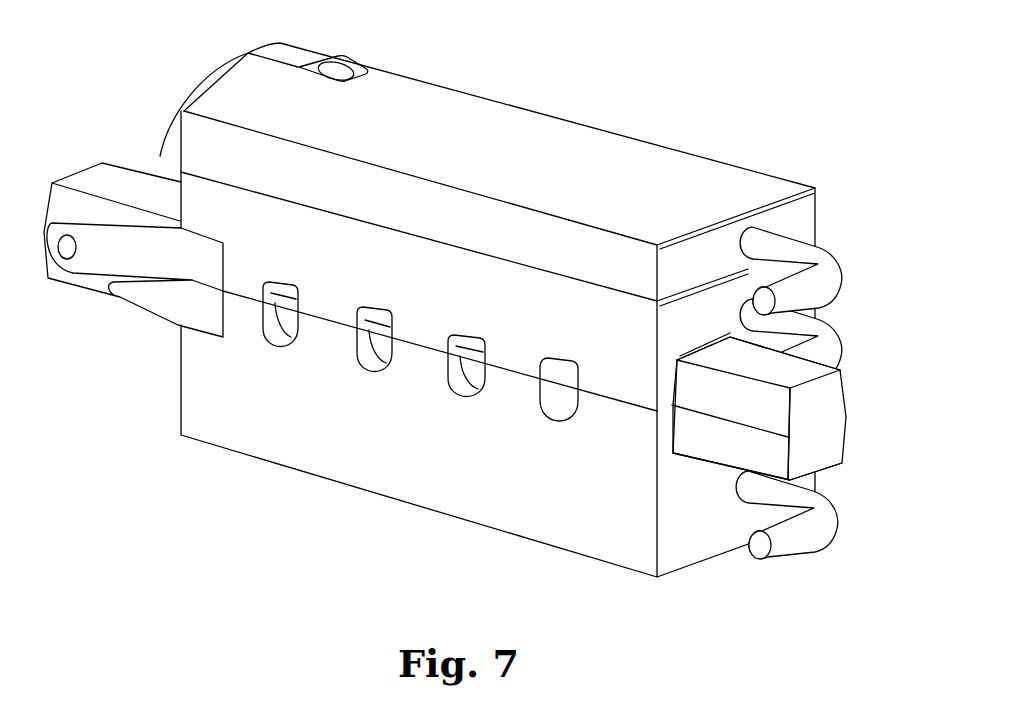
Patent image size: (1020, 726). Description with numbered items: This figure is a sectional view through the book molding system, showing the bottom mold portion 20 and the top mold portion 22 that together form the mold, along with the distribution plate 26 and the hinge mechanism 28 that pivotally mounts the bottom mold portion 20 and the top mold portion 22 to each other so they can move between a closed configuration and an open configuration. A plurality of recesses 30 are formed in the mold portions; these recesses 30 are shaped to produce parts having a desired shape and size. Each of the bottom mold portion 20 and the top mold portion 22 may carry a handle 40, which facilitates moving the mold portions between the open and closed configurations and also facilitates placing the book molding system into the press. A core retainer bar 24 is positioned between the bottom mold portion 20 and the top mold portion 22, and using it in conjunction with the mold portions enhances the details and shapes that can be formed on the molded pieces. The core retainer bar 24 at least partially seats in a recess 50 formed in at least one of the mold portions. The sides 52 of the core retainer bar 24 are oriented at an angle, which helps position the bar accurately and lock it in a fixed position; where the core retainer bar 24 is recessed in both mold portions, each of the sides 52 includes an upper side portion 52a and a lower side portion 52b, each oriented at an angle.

The bottom mold portion 20 is at (625, 552).
The top mold portion 22 is at (195, 192).
The core retainer bar 24 is at (842, 418).
The distribution plate 26 is at (773, 242).
The hinge mechanism 28 is at (216, 78).
The recesses 30 is at (284, 284).
The handle 40 is at (838, 272).
The recess 50 is at (686, 383).
The sides 52 is at (772, 470).
The upper side portion 52a is at (838, 397).
The lower side portion 52b is at (838, 442).